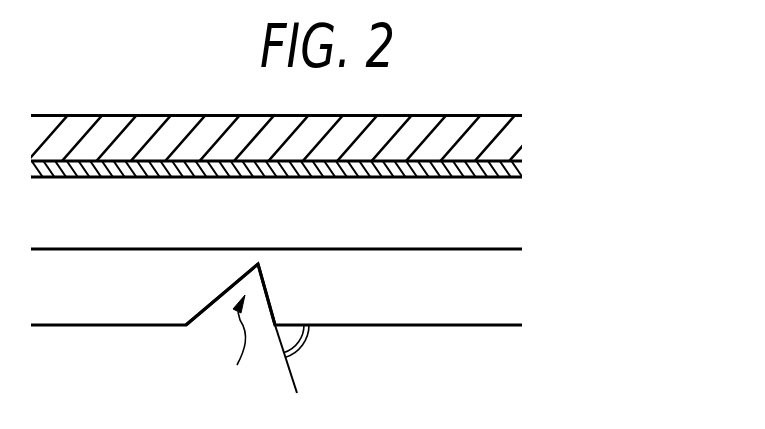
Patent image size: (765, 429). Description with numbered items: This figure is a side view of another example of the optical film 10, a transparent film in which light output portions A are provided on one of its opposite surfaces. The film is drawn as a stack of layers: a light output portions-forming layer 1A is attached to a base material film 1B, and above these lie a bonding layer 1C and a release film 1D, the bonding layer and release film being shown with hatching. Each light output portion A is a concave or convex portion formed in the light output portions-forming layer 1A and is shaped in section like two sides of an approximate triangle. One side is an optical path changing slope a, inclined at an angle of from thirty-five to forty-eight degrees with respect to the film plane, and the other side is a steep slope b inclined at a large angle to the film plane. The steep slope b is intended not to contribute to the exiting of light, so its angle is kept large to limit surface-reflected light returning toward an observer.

The release film 1D is at (523, 127).
The bonding layer 1C is at (525, 172).
The base material film 1B is at (513, 216).
The light output portions-forming layer 1A is at (513, 302).
The optical film 10 is at (617, 102).
The optical path changing slope a is at (208, 307).
The steep slope b is at (264, 290).
The light output portion A is at (235, 347).